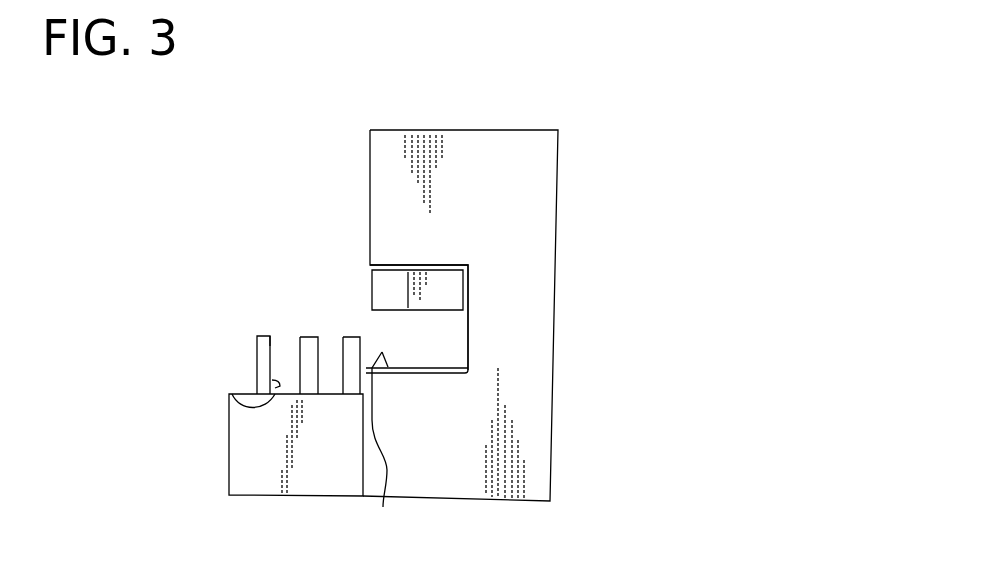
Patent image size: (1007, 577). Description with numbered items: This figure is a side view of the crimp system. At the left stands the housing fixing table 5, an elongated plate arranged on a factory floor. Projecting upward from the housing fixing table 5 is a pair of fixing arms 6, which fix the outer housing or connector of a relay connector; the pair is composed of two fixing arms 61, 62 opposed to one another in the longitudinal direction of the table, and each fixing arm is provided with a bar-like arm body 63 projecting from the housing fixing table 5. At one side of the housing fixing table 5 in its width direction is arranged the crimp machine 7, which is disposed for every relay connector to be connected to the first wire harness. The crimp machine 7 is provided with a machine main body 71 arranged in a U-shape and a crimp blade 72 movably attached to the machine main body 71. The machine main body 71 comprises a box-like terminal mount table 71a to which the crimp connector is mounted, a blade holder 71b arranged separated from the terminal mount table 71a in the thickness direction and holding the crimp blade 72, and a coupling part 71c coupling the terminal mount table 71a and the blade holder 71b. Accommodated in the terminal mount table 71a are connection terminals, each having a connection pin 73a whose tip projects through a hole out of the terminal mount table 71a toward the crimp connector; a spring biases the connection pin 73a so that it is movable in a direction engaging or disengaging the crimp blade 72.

The housing fixing table 5 is at (244, 464).
The pair of fixing arms 6 is at (350, 334).
The fixing arm 61 is at (257, 362).
The fixing arm 62 is at (271, 347).
The arm body 63 is at (226, 396).
The crimp machine 7 is at (560, 129).
The machine main body 71 is at (652, 237).
The terminal mount table 71a is at (415, 423).
The blade holder 71b is at (413, 242).
The coupling part 71c is at (505, 315).
The crimp blade 72 is at (370, 288).
The connection pin 73a is at (384, 445).